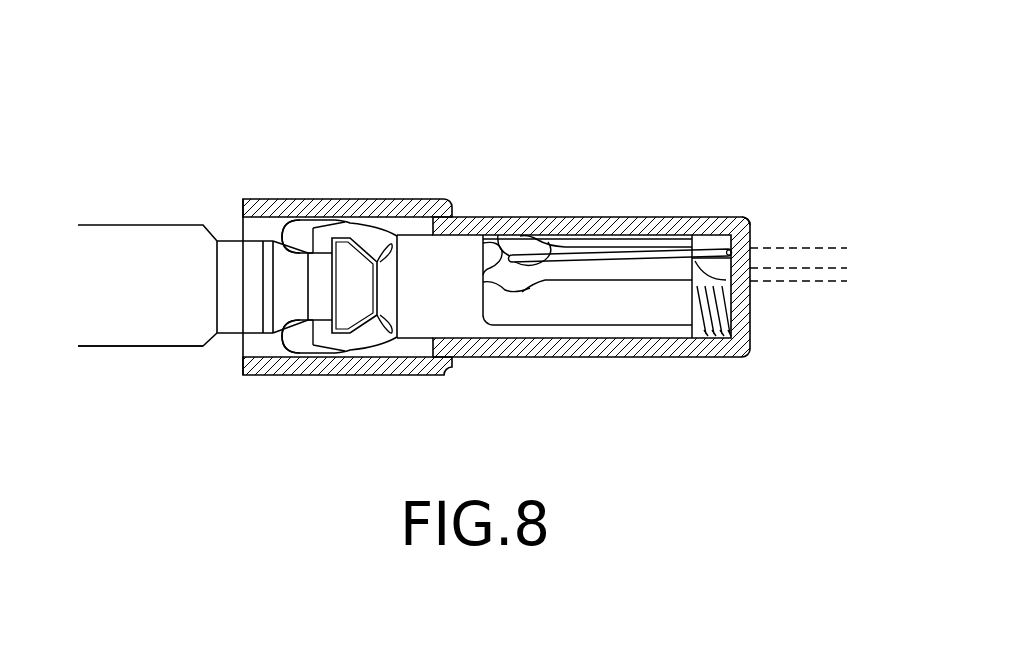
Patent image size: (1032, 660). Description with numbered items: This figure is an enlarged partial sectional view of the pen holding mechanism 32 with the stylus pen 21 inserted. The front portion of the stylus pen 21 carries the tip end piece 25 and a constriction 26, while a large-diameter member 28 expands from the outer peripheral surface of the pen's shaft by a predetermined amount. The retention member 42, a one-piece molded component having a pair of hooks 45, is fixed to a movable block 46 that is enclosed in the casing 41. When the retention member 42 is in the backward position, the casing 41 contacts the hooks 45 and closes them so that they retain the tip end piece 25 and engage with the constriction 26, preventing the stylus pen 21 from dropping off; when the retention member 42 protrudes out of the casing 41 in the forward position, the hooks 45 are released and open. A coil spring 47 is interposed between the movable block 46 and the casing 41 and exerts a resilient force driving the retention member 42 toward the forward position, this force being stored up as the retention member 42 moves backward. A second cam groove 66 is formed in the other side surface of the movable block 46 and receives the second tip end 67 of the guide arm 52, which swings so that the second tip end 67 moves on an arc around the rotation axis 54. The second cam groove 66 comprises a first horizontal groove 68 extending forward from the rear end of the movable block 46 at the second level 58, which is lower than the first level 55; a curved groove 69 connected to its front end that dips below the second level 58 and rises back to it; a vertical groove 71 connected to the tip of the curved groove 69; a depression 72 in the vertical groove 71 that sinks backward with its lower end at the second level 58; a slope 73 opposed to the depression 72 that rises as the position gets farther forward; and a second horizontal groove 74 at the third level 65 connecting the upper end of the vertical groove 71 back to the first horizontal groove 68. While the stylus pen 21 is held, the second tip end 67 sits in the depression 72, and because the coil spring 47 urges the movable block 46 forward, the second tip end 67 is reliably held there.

The stylus pen 21 is at (139, 200).
The tip end piece 25 is at (350, 238).
The constriction 26 is at (316, 252).
The large-diameter member 28 is at (169, 347).
The pen holding mechanism 32 is at (668, 118).
The casing 41 is at (258, 199).
The retention member 42 is at (318, 378).
The hooks 45 is at (298, 225).
The movable block 46 is at (417, 338).
The coil spring 47 is at (705, 330).
The guide arm 52 is at (710, 226).
The rotation axis 54 is at (740, 218).
The first level 55 is at (832, 268).
The second level 58 is at (820, 281).
The third level 65 is at (778, 250).
The second cam groove 66 is at (621, 247).
The second tip end 67 is at (518, 254).
The first horizontal groove 68 is at (640, 280).
The curved groove 69 is at (528, 284).
The vertical groove 71 is at (494, 283).
The depression 72 is at (499, 236).
The slope 73 is at (491, 243).
The second horizontal groove 74 is at (546, 240).